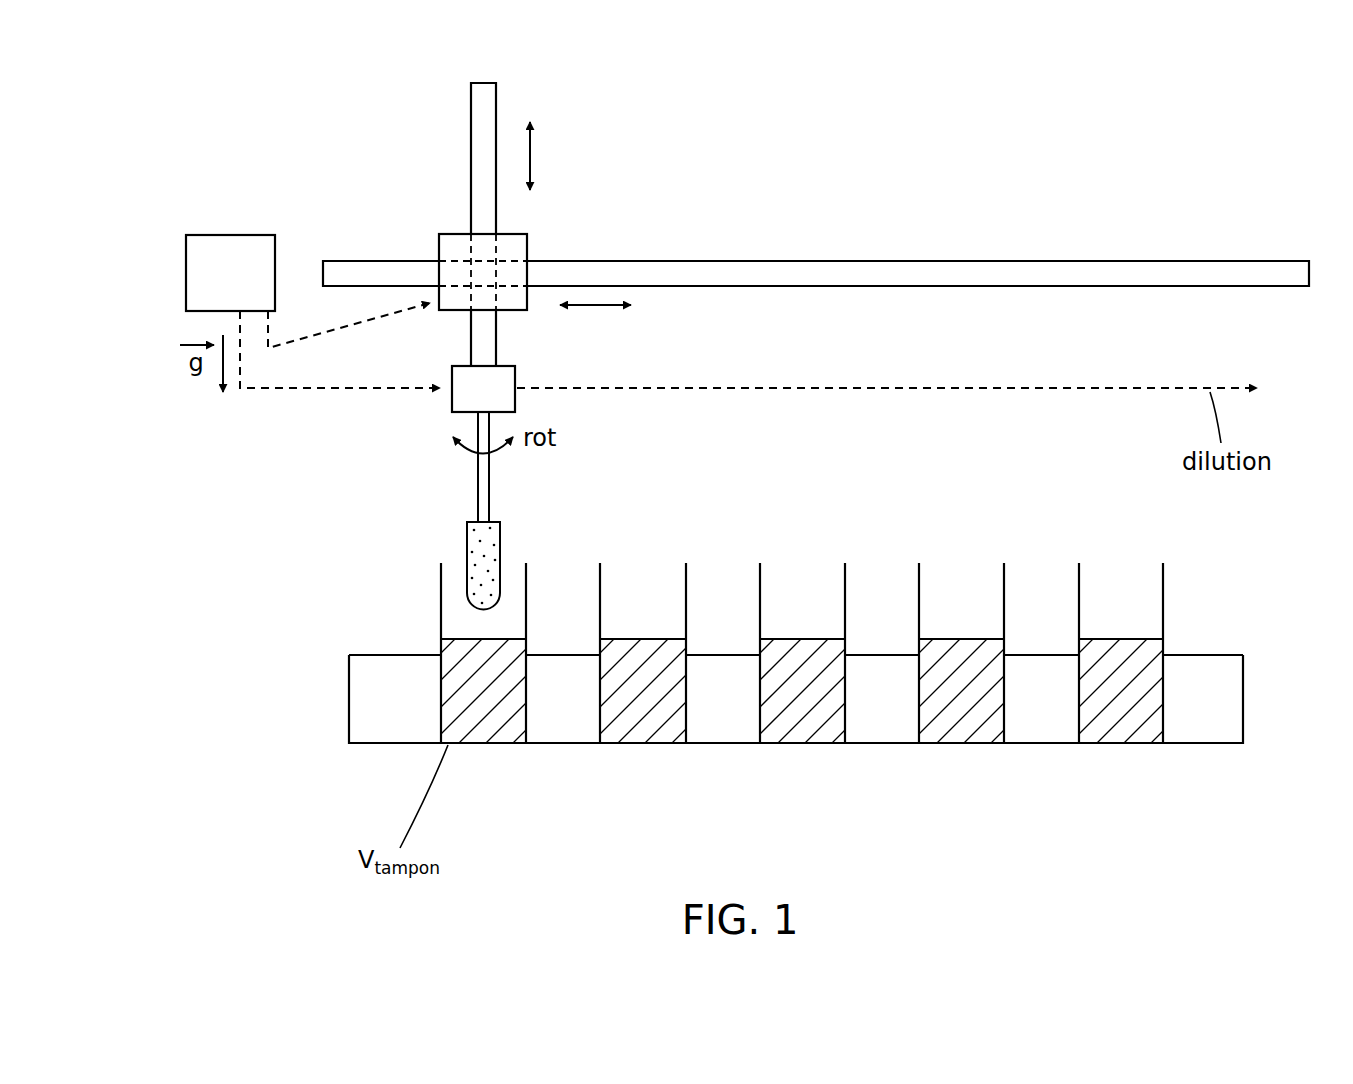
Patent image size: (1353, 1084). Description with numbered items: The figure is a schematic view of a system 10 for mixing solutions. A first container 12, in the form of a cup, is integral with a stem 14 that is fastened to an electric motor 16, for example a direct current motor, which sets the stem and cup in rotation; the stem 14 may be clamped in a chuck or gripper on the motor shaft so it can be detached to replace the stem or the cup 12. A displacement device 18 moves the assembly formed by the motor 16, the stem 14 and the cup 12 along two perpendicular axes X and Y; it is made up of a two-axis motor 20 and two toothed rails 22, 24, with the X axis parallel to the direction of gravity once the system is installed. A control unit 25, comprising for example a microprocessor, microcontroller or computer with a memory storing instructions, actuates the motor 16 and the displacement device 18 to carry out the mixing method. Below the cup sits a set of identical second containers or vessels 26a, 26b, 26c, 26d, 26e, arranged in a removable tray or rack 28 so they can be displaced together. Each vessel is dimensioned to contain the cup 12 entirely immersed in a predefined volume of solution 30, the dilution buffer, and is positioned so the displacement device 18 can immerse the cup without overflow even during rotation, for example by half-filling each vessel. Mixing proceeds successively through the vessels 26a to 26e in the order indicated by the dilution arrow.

The system for mixing solutions 10 is at (268, 137).
The first container 12 is at (500, 525).
The stem 14 is at (490, 484).
The electric motor 16 is at (516, 378).
The displacement device 18 is at (572, 204).
The two-axis motor 20 is at (528, 246).
The toothed rail 22 is at (497, 95).
The toothed rail 24 is at (356, 259).
The control unit 25 is at (186, 271).
The second container 26a is at (485, 745).
The second container 26b is at (643, 745).
The second container 26c is at (802, 745).
The second container 26d is at (962, 745).
The second container 26e is at (1122, 745).
The removable tray or rack 28 is at (350, 745).
The solution 30 is at (451, 653).